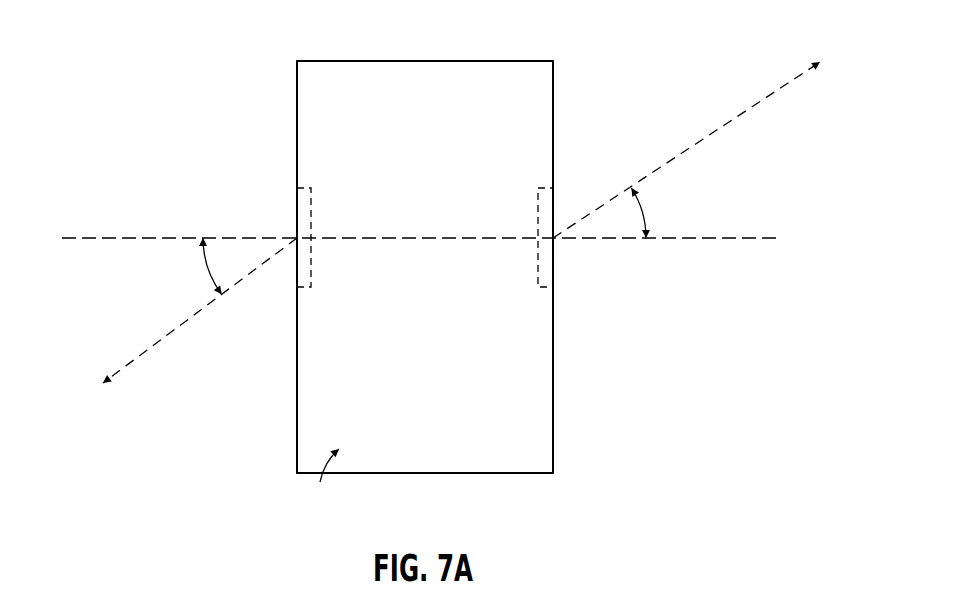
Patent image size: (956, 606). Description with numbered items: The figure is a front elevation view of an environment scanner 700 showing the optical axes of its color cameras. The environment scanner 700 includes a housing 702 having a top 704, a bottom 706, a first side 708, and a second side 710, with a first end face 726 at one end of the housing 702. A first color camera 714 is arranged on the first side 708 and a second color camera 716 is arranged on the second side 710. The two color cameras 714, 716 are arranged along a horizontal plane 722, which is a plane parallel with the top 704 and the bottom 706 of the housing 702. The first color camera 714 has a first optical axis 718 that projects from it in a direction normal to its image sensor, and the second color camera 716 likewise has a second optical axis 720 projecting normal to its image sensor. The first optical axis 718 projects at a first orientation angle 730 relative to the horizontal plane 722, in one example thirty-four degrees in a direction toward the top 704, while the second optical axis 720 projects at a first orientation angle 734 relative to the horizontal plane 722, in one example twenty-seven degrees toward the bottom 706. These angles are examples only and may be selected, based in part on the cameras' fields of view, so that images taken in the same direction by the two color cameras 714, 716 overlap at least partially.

The environment scanner 700 is at (113, 106).
The housing 702 is at (420, 78).
The top 704 is at (485, 61).
The bottom 706 is at (488, 473).
The first side 708 is at (553, 420).
The second side 710 is at (297, 418).
The first color camera 714 is at (545, 193).
The second color camera 716 is at (300, 192).
The first optical axis 718 is at (765, 97).
The second optical axis 720 is at (147, 349).
The horizontal plane 722 is at (715, 240).
The first end face 726 is at (321, 486).
The first orientation angle 730 is at (640, 210).
The first orientation angle 734 is at (205, 272).